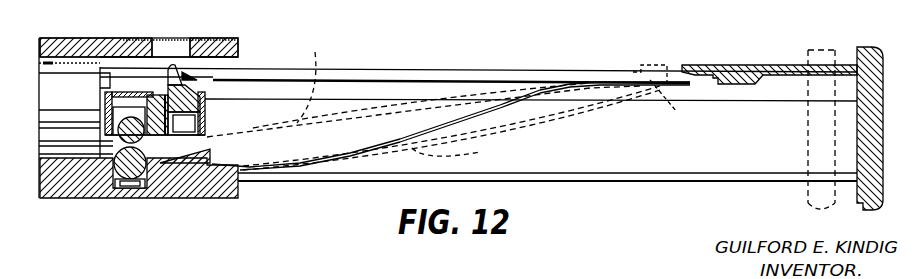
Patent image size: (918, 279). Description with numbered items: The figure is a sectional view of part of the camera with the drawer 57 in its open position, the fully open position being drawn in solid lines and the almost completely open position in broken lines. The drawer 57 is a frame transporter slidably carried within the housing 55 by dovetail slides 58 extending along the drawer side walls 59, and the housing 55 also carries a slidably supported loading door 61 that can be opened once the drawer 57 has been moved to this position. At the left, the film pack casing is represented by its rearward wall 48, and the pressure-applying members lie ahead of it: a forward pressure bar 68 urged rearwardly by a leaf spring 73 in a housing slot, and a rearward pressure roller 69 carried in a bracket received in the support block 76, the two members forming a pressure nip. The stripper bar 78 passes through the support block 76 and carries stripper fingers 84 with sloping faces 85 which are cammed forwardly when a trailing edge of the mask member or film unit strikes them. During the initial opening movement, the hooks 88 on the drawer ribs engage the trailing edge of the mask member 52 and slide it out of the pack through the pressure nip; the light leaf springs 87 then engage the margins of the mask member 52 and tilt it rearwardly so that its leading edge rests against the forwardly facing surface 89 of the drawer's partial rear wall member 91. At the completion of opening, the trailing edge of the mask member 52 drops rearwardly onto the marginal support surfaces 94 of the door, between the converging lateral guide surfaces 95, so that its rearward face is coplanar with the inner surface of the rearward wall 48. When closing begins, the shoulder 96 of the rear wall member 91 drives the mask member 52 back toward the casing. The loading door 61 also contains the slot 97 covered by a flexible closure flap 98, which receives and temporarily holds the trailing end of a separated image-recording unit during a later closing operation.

The rearward wall 48 is at (60, 63).
The mask member 52 is at (283, 70).
The housing 55 is at (64, 199).
The drawer 57 is at (579, 190).
The dovetail slides 58 is at (446, 0).
The drawer side walls 59 is at (471, 0).
The loading door 61 is at (867, 47).
The forward pressure bar 68 is at (110, 160).
The rearward pressure roller 69 is at (105, 133).
The leaf spring 73 is at (133, 189).
The support block 76 is at (220, 127).
The stripper bar 78 is at (205, 103).
The stripper fingers 84 is at (213, 52).
The sloping faces 85 is at (240, 56).
The leaf spring 87 is at (448, 130).
The hooks 88 is at (175, 160).
The forwardly facing surface 89 is at (690, 84).
The partial rear wall member 91 is at (640, 64).
The marginal support surfaces 94 is at (110, 77).
The lateral guide surfaces 95 is at (138, 72).
The shoulder 96 is at (697, 65).
The slot 97 is at (153, 52).
The closure flap 98 is at (187, 65).